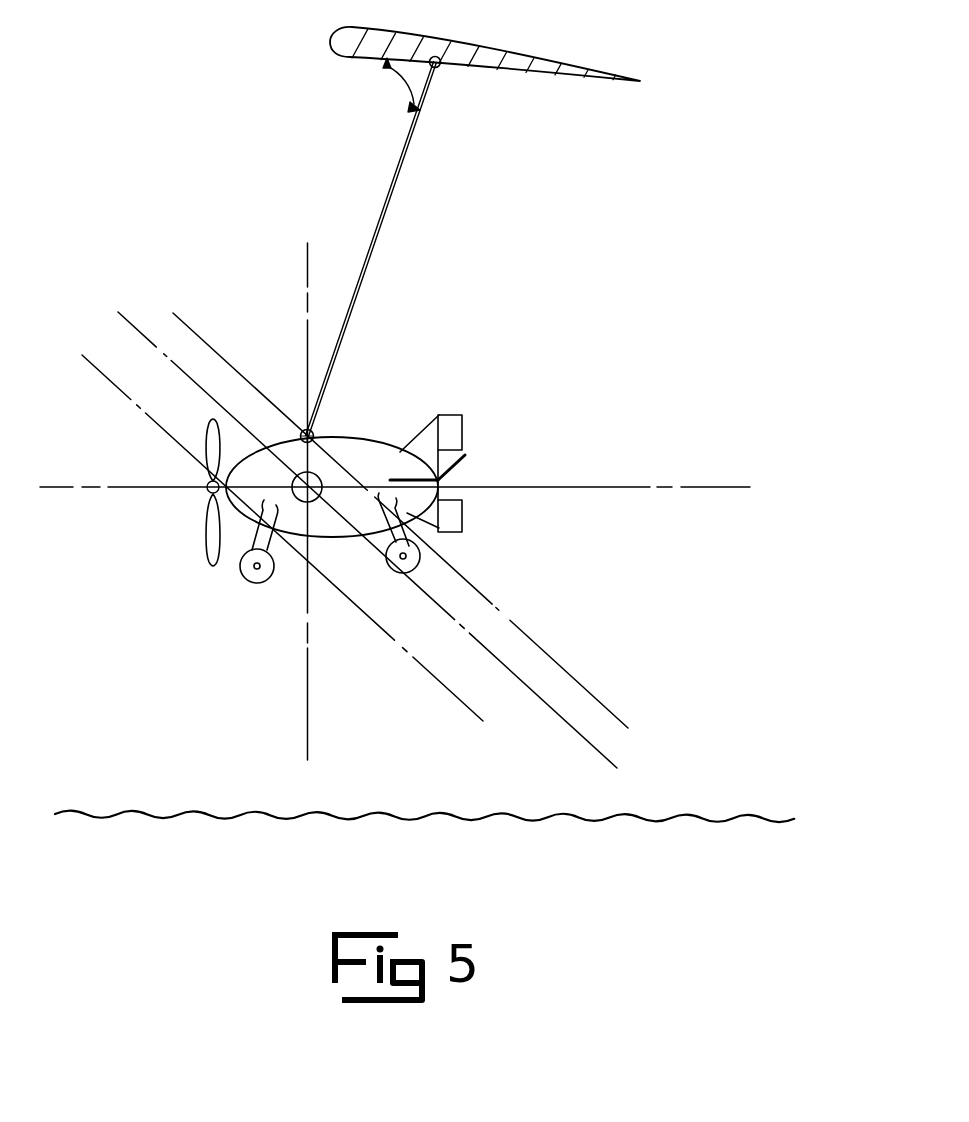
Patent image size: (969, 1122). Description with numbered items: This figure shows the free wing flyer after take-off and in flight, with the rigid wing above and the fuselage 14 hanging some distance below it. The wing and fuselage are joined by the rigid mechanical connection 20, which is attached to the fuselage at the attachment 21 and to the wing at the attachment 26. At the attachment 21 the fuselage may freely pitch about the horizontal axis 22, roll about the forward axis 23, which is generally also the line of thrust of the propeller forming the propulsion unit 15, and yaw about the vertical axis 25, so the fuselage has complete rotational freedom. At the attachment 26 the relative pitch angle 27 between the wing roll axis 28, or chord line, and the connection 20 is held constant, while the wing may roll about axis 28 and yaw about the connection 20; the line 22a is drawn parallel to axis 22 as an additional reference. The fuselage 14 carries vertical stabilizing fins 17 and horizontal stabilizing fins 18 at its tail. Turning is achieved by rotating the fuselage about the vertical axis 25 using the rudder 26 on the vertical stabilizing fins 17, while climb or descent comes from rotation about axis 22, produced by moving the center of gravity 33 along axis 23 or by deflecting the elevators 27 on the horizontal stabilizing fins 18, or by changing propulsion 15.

The fuselage 14 is at (333, 518).
The propulsion unit 15 is at (208, 489).
The vertical stabilizing fins 17 is at (416, 430).
The horizontal stabilizing fins 18 is at (400, 478).
The mechanical connection 20 is at (387, 220).
The attachment to fuselage 21 is at (312, 431).
The horizontal axis 22 is at (257, 392).
The inclined reference line 22a is at (131, 323).
The forward axis 23 is at (61, 486).
The vertical axis 25 is at (306, 262).
The attachment to wing 26 is at (440, 66).
The relative pitch angle 27 is at (400, 93).
The wing roll axis 28 is at (121, 389).
The center of gravity 33 is at (295, 481).